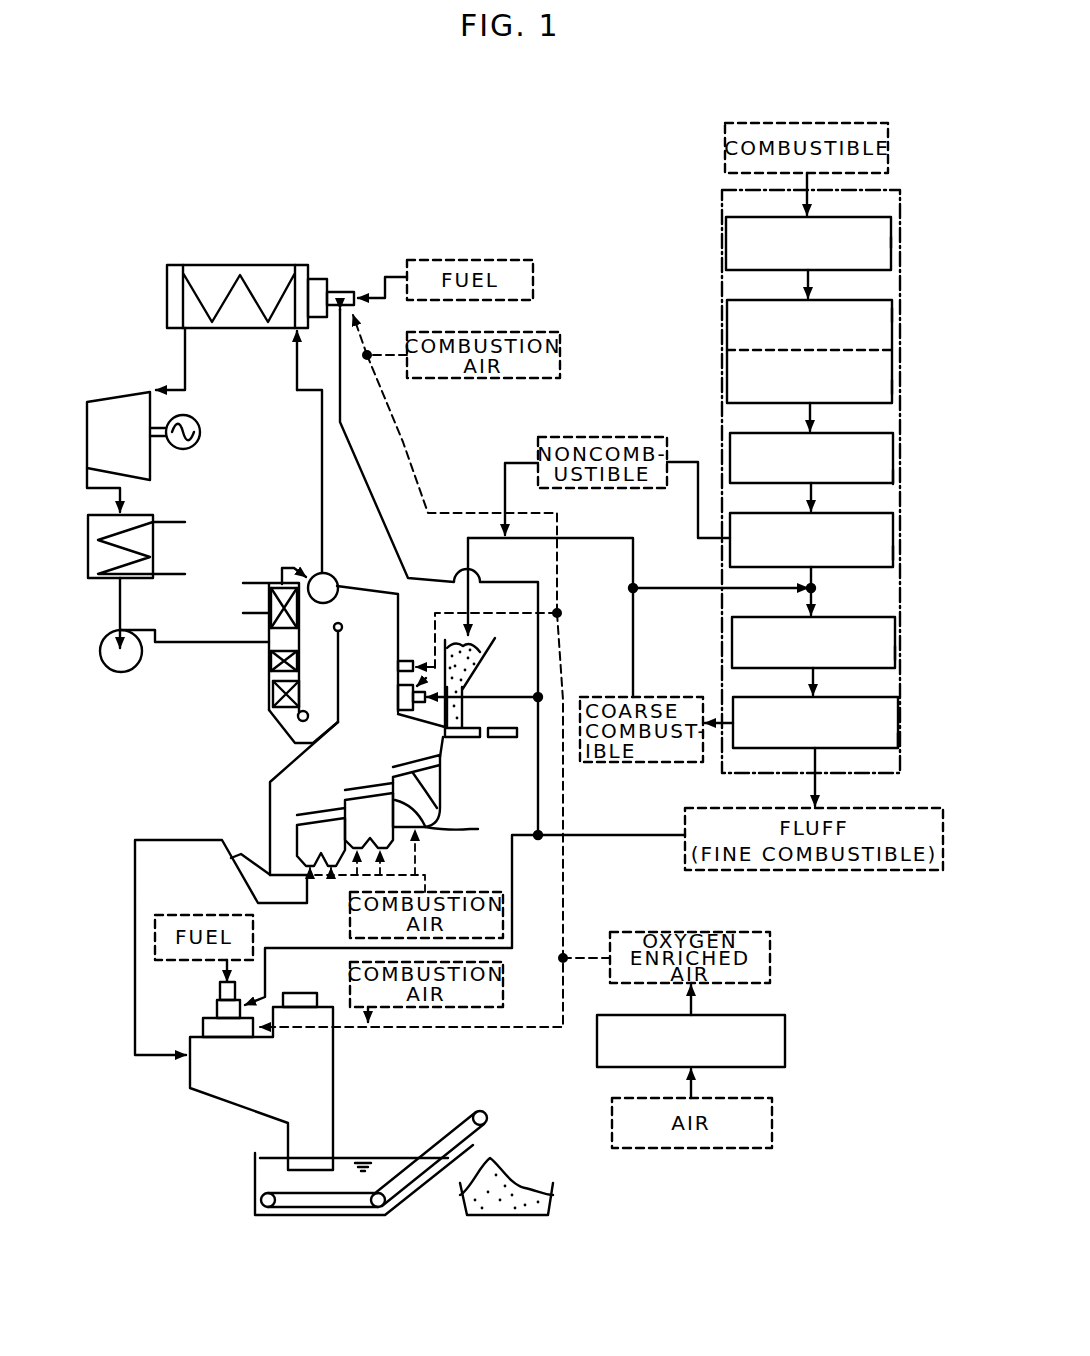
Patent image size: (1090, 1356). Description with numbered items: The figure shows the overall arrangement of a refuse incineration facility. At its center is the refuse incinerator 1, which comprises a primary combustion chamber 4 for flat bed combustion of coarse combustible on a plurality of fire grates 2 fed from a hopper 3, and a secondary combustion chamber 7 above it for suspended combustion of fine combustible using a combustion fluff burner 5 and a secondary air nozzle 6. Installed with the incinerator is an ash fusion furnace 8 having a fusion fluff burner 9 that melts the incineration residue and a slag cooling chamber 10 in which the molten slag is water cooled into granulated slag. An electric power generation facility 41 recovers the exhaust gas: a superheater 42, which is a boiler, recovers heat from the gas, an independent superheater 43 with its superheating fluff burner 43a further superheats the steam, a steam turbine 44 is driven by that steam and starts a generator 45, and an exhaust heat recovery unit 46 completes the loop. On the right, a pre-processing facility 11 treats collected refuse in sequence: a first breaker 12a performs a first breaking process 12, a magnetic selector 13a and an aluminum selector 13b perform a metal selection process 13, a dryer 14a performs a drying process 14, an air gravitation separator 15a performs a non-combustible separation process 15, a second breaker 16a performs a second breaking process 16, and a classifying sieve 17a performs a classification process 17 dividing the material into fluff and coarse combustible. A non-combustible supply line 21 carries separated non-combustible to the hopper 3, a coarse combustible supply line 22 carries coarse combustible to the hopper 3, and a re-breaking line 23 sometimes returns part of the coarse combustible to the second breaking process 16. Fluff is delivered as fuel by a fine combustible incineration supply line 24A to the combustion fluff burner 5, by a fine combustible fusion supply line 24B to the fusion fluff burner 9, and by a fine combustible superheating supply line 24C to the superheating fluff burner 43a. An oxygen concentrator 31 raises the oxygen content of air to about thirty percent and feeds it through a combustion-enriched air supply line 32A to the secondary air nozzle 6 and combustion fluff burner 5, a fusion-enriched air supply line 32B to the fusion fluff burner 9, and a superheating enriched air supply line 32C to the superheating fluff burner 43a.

The refuse incinerator 1 is at (254, 708).
The fire grates 2 is at (305, 815).
The hopper 3 is at (470, 680).
The primary combustion chamber 4 is at (344, 777).
The combustion fluff burner 5 is at (399, 712).
The secondary air nozzle 6 is at (397, 662).
The secondary combustion chamber 7 is at (359, 699).
The ash fusion furnace 8 is at (349, 1071).
The fusion fluff burner 9 is at (217, 1008).
The slag cooling chamber 10 is at (255, 1183).
The pre-processing facility 11 is at (717, 256).
The first breaking or comminuting process 12 is at (898, 228).
The first breaker 12a is at (892, 243).
The metal selection process 13 is at (898, 360).
The magnetic selector 13a is at (893, 315).
The aluminum selector 13b is at (893, 387).
The drying process 14 is at (898, 455).
The dryer 14a is at (897, 477).
The non-combustible separation process 15 is at (898, 528).
The air gravitation separator 15a is at (897, 553).
The second breaking or comminuting process 16 is at (898, 627).
The second breaker 16a is at (897, 653).
The classification process 17 is at (905, 717).
The classifying sieve 17a is at (900, 740).
The non-combustible supply line 21 is at (697, 460).
The coarse combustible supply line 22 is at (582, 540).
The re-breaking line 23 is at (674, 587).
The fine combustible incineration supply line 24A is at (503, 696).
The fine combustible fusion supply line 24B is at (513, 942).
The fine combustible superheating supply line 24C is at (383, 510).
The oxygen concentrator 31 is at (786, 1033).
The combustion-enriched air supply line 32A is at (433, 611).
The fusion-enriched air supply line 32B is at (495, 1028).
The superheating enriched air supply line 32C is at (407, 437).
The electric power generation facility 41 is at (145, 324).
The superheater 42 is at (277, 585).
The independent superheater 43 is at (227, 265).
The superheating fluff burner 43a is at (342, 290).
The steam turbine 44 is at (128, 400).
The generator 45 is at (201, 434).
The exhaust heat recovery unit 46 is at (132, 513).